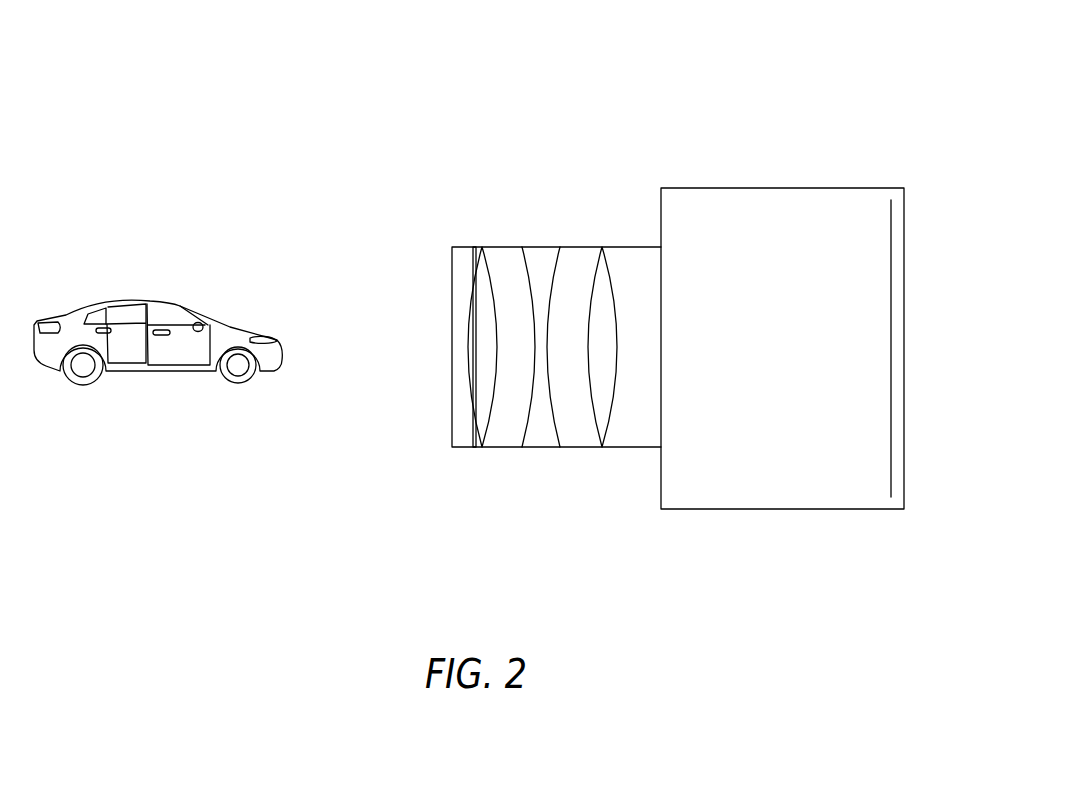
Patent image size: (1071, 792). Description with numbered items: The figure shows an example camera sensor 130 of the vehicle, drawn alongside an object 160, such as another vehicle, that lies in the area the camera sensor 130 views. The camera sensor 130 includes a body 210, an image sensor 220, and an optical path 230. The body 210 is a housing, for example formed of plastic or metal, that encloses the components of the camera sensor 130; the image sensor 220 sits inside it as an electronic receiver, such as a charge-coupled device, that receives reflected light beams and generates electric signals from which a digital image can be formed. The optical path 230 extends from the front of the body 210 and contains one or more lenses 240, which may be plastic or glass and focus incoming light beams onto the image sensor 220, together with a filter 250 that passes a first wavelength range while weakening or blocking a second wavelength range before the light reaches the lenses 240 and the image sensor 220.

The camera sensor 130 is at (640, 291).
The object 160 is at (173, 352).
The body 210 is at (843, 188).
The image sensor 220 is at (888, 457).
The optical path 230 is at (514, 346).
The lenses 240 is at (482, 362).
The filter 250 is at (452, 417).